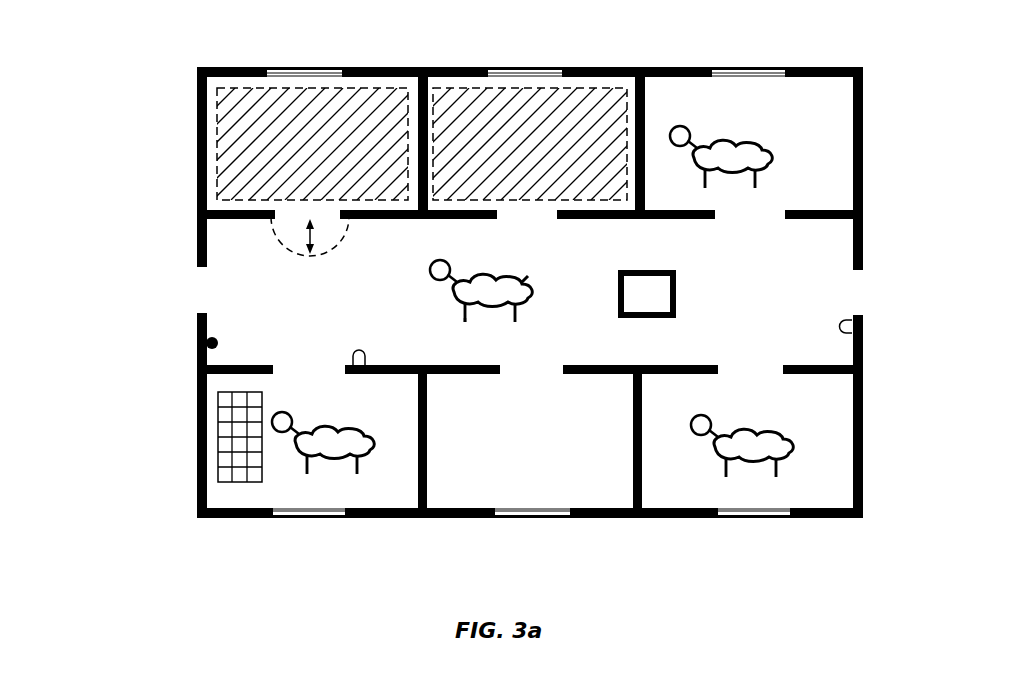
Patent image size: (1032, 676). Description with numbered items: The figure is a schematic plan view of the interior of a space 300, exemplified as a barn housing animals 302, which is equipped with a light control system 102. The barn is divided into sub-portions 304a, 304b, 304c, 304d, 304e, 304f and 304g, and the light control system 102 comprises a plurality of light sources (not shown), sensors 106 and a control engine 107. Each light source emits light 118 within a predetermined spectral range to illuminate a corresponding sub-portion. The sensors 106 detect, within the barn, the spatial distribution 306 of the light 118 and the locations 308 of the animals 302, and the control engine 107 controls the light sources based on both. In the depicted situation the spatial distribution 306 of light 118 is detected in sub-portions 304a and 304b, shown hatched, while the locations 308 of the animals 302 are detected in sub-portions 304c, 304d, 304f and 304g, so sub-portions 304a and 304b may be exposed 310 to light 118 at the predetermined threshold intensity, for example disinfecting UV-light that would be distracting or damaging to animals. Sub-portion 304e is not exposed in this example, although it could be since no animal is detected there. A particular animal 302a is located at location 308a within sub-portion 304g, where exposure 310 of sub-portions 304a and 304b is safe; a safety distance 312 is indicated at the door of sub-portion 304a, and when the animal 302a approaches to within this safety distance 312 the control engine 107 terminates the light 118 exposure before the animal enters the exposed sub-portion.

The space 300 is at (158, 107).
The light control system 102 is at (206, 302).
The sensor 106 is at (356, 352).
The control engine 107 is at (220, 340).
The light 118 is at (265, 95).
The animals 302 is at (740, 138).
The animal 302a is at (523, 281).
The sub-portion 304a is at (385, 90).
The sub-portion 304b is at (605, 82).
The sub-portion 304c is at (825, 85).
The sub-portion 304d is at (228, 493).
The sub-portion 304e is at (447, 497).
The sub-portion 304f is at (670, 497).
The sub-portion 304g is at (825, 260).
The spatial distribution of light 306 is at (340, 95).
The locations of the animals 308 is at (732, 185).
The location of the animal 308a is at (490, 323).
The light exposure 310 is at (358, 100).
The safety distance 312 is at (303, 236).